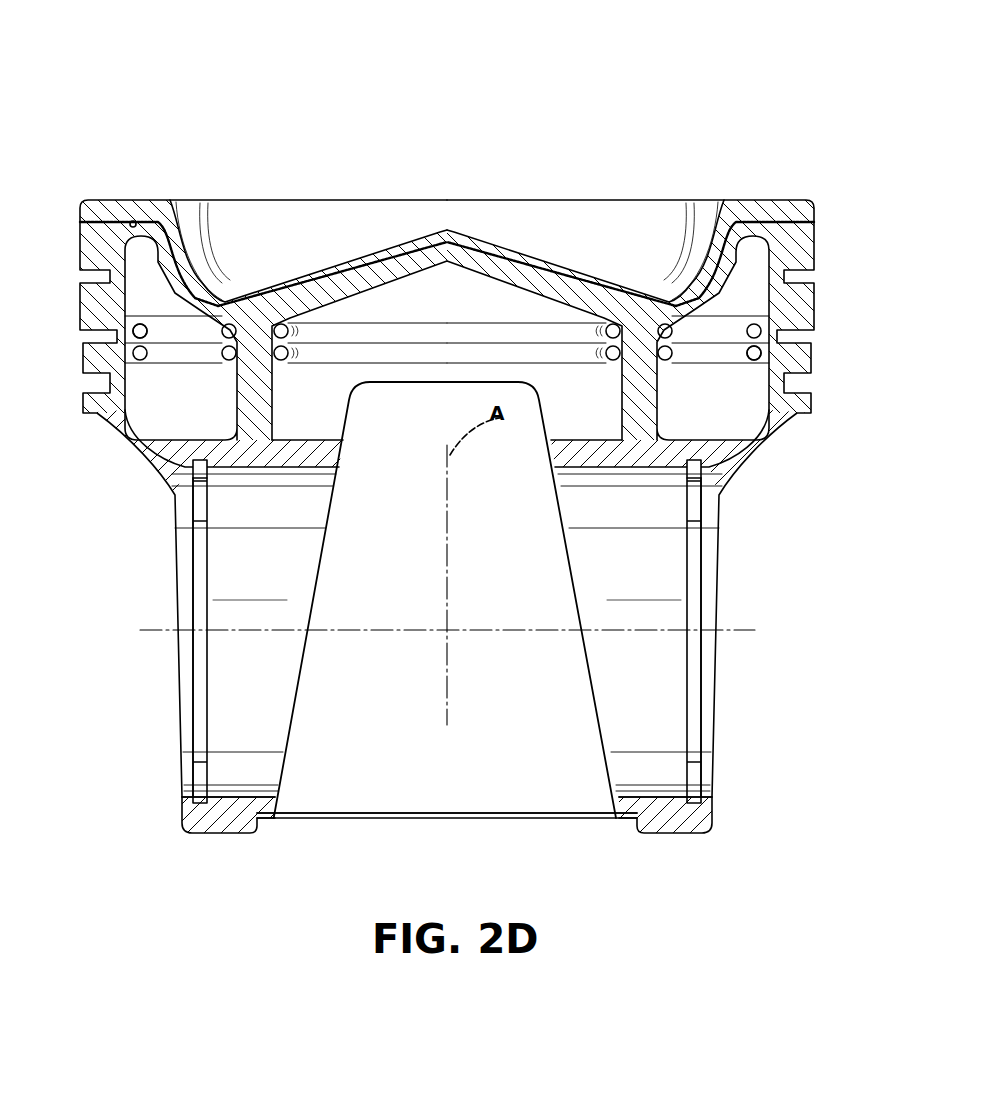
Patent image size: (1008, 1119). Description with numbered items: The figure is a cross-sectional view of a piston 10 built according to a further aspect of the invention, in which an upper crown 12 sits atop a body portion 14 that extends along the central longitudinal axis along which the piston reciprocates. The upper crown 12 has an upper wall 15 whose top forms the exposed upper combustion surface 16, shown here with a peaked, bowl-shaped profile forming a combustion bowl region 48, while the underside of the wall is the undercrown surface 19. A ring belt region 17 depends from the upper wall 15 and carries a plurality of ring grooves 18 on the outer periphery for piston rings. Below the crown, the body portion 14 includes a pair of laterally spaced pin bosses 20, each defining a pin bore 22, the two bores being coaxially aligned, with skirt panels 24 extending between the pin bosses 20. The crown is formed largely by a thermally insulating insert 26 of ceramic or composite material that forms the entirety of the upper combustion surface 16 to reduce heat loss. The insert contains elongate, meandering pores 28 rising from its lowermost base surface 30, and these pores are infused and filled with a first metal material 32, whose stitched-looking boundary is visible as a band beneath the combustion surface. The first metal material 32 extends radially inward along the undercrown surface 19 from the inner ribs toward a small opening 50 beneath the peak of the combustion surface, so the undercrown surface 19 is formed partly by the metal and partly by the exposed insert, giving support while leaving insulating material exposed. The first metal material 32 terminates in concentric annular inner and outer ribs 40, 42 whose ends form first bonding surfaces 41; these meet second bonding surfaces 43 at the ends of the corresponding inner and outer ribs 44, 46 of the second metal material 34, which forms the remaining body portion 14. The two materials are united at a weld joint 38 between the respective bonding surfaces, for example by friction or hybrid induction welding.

The piston 10 is at (691, 96).
The upper crown 12 is at (832, 200).
The body portion 14 is at (798, 456).
The upper wall 15 is at (352, 266).
The upper combustion surface 16 is at (556, 194).
The ring belt region 17 is at (70, 397).
The ring grooves 18 is at (800, 386).
The undercrown surface 19 is at (460, 262).
The pin bosses 20 is at (232, 836).
The pin bore 22 is at (242, 787).
The skirt panels 24 is at (463, 818).
The thermally insulating insert 26 is at (753, 190).
The pores 28 is at (131, 218).
The base surface 30 is at (196, 305).
The first metal material 32 is at (808, 262).
The second metal material 34 is at (780, 416).
The weld joint 38 is at (170, 353).
The inner rib 40 is at (292, 325).
The first bonding surfaces 41 is at (124, 405).
The outer rib 42 is at (130, 305).
The second bonding surfaces 43 is at (253, 300).
The inner rib 44 is at (273, 412).
The outer rib 46 is at (75, 368).
The combustion bowl region 48 is at (631, 231).
The opening 50 is at (446, 246).